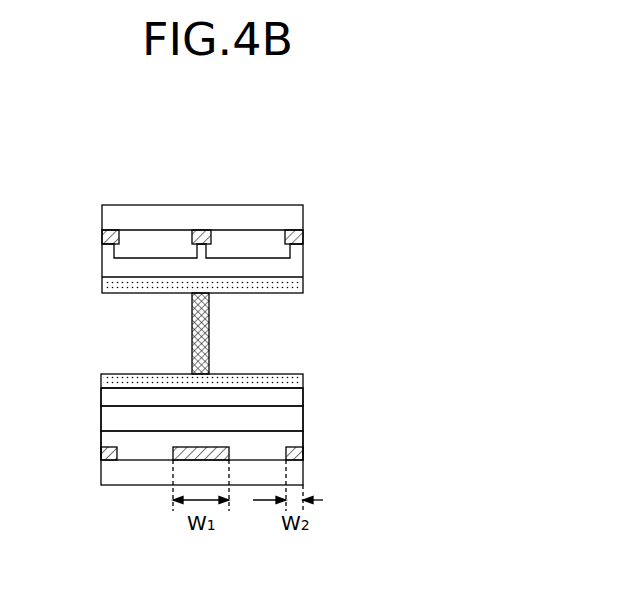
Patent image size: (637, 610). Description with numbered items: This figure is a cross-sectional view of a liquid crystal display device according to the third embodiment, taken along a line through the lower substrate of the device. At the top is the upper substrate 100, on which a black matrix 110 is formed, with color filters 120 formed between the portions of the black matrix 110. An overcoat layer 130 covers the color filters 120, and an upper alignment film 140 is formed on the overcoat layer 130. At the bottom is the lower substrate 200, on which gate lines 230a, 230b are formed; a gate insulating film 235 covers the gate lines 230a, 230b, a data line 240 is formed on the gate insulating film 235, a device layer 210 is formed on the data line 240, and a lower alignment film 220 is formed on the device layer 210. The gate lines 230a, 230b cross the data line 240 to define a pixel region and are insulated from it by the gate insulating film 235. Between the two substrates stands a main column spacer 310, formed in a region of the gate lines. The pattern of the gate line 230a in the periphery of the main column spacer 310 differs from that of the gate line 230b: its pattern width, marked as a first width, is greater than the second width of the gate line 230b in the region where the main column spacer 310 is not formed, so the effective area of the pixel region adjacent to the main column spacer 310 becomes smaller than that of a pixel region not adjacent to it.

The upper substrate 100 is at (303, 207).
The black matrix 110 is at (305, 233).
The color filters 120 is at (294, 249).
The overcoat layer 130 is at (301, 267).
The upper alignment film 140 is at (302, 286).
The main column spacer 310 is at (209, 334).
The lower substrate 200 is at (299, 473).
The device layer 210 is at (299, 398).
The lower alignment film 220 is at (305, 378).
The data line 240 is at (299, 416).
The gate insulating film 235 is at (299, 437).
The gate line 230a is at (176, 451).
The gate line 230b is at (108, 452).